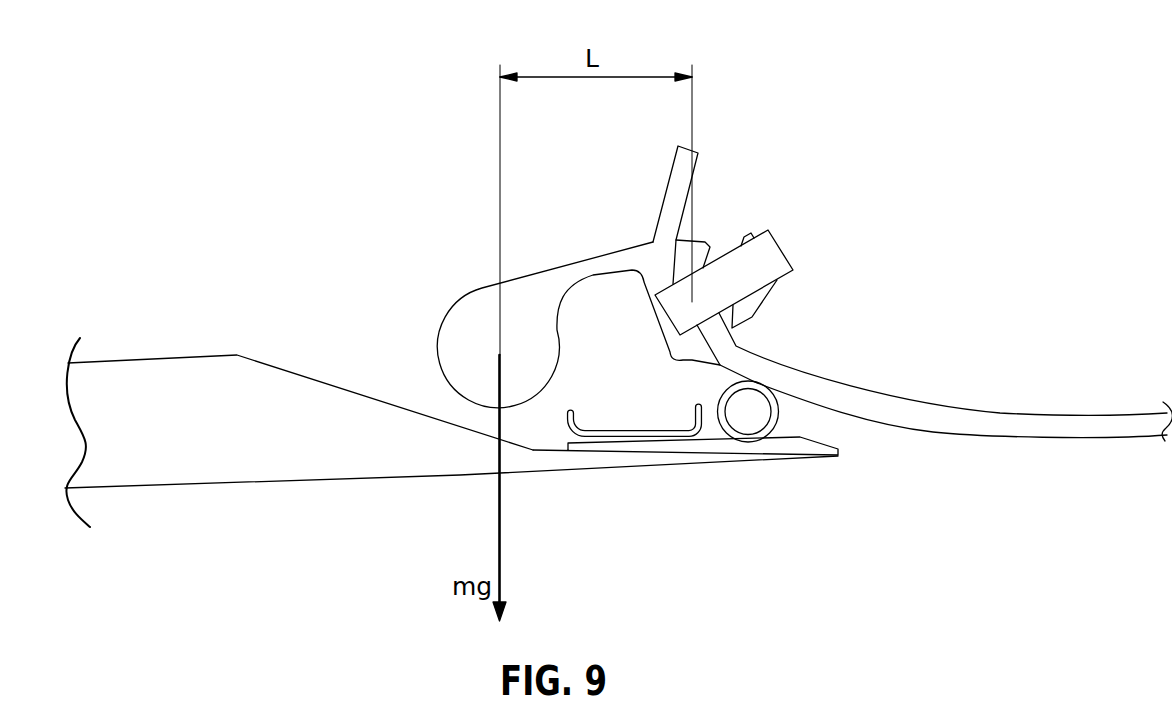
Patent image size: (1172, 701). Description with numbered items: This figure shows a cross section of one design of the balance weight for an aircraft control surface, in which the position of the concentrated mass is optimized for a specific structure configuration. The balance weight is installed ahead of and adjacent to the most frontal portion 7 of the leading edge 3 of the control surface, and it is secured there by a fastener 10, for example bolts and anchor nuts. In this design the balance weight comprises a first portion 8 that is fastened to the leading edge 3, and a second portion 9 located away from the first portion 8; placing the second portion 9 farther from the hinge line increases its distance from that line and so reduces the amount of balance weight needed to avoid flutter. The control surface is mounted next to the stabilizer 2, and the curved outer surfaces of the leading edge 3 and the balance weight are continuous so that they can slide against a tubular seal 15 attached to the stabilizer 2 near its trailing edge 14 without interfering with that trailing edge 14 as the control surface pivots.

The stabilizer 2 is at (193, 462).
The leading edge 3 is at (948, 422).
The most frontal portion 7 is at (670, 217).
The first portion 8 is at (536, 279).
The second portion 9 is at (463, 335).
The fastener 10 is at (753, 272).
The trailing edge 14 is at (830, 459).
The tubular seal 15 is at (743, 425).